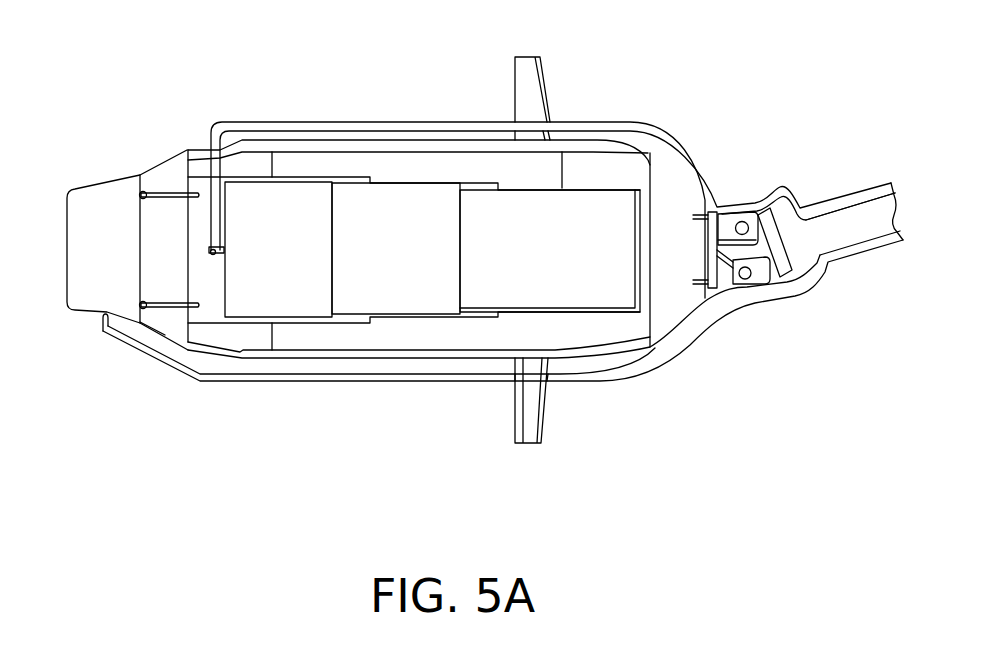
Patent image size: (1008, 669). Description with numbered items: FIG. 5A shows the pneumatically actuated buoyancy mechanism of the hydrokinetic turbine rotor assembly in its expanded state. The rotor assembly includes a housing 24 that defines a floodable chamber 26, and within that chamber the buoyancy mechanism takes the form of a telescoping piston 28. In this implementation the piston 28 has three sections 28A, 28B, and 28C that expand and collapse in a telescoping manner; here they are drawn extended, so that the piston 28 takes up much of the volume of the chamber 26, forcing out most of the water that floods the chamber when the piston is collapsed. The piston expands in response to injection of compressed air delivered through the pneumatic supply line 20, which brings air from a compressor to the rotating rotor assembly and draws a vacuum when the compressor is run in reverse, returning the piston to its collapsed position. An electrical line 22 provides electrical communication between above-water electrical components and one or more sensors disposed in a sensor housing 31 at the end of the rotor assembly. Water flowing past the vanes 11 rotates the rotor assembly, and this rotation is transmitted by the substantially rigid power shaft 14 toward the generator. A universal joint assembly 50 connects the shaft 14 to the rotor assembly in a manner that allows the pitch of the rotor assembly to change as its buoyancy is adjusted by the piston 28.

The vanes 11 is at (530, 78).
The power shaft 14 is at (855, 222).
The pneumatic supply line 20 is at (288, 122).
The electrical line 22 is at (177, 368).
The housing 24 is at (167, 155).
The floodable chamber 26 is at (462, 333).
The telescoping piston 28 is at (314, 324).
The first piston section 28A is at (315, 177).
The second piston section 28B is at (405, 183).
The third piston section 28C is at (597, 187).
The sensor housing 31 is at (98, 205).
The universal joint assembly 50 is at (729, 215).